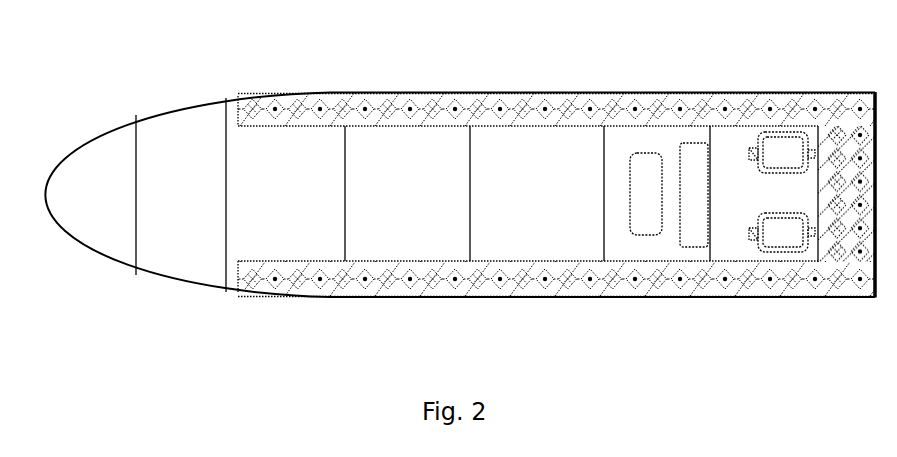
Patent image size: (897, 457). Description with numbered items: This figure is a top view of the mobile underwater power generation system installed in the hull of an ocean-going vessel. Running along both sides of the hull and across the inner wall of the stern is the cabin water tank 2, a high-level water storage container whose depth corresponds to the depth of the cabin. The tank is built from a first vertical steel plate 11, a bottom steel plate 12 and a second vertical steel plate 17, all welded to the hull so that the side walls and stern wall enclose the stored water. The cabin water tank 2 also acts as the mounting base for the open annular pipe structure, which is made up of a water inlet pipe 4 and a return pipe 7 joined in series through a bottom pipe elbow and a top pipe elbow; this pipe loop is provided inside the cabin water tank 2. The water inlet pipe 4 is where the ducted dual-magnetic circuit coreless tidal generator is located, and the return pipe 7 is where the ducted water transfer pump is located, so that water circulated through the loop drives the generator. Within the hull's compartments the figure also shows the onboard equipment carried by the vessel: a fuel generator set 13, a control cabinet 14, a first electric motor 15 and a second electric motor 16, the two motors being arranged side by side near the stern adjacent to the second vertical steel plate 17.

The cabin water tank 2 is at (240, 102).
The first vertical steel plate 11 is at (308, 108).
The bottom steel plate 12 is at (355, 100).
The water inlet pipe 4 is at (427, 103).
The return pipe 7 is at (450, 98).
The fuel generator set 13 is at (645, 168).
The control cabinet 14 is at (695, 167).
The first electric motor 15 is at (770, 230).
The second electric motor 16 is at (783, 143).
The second vertical steel plate 17 is at (813, 150).